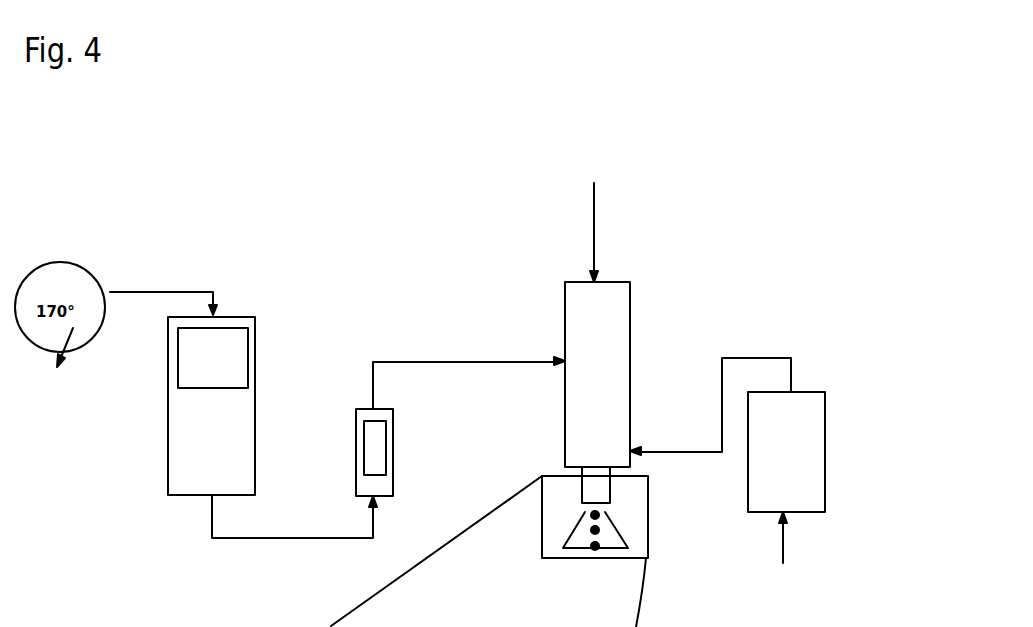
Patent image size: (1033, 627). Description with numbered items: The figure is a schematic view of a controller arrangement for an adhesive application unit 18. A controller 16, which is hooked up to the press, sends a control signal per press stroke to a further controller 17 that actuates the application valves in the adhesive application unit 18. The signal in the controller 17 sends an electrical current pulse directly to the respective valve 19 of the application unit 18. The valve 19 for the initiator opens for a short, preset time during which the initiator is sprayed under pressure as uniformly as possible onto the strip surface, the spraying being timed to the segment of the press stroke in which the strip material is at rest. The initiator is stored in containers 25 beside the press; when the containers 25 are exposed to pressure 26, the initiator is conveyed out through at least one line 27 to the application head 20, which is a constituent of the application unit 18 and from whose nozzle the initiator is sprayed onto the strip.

The controller 16 is at (187, 438).
The controller 17 is at (367, 419).
The adhesive application unit 18 is at (646, 333).
The valve 19 is at (597, 339).
The application head 20 is at (598, 490).
The container 25 is at (803, 417).
The pressure 26 is at (789, 545).
The line 27 is at (743, 355).